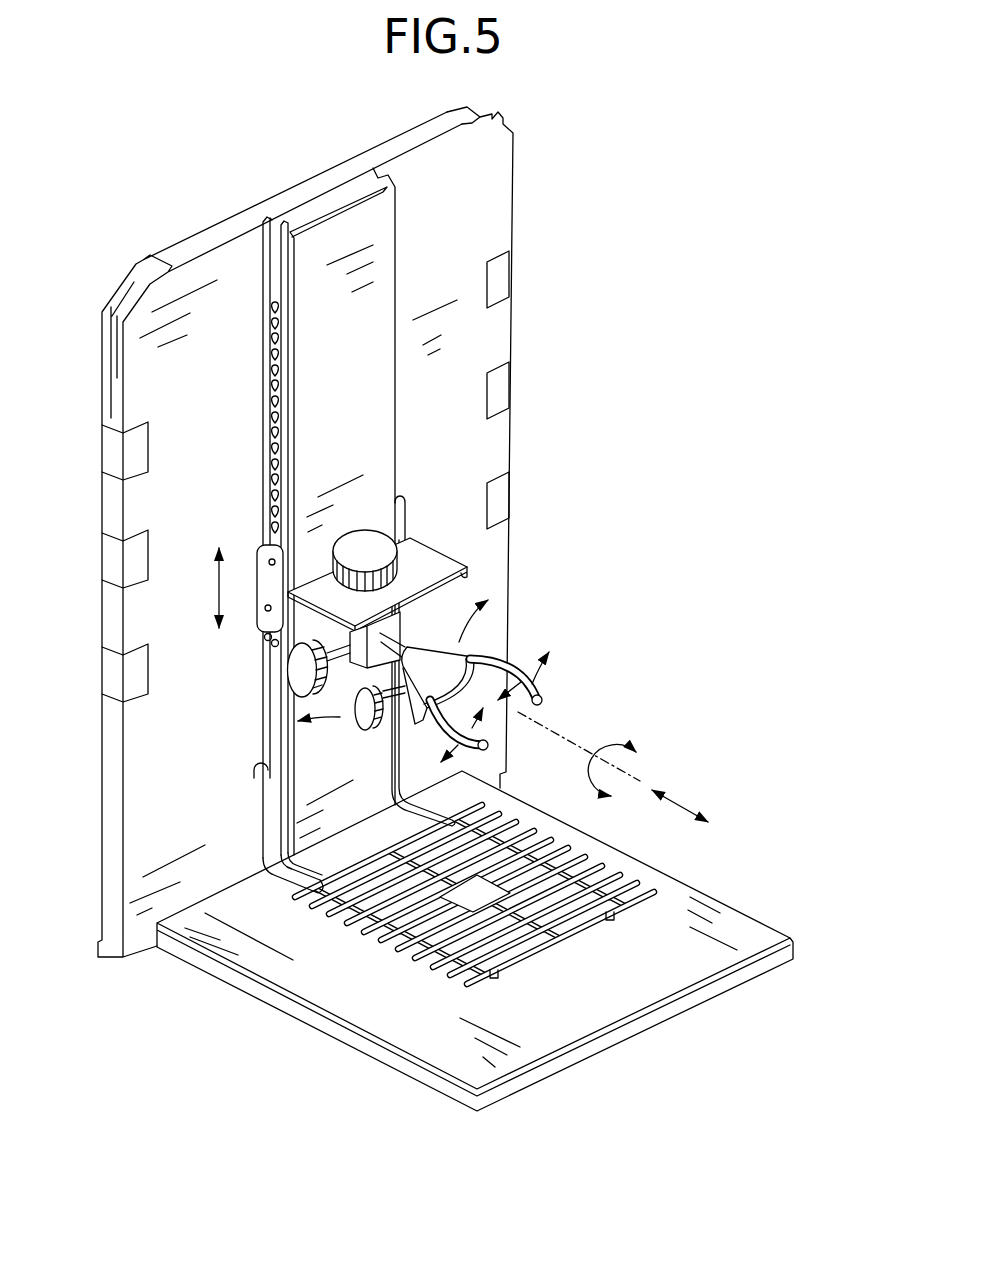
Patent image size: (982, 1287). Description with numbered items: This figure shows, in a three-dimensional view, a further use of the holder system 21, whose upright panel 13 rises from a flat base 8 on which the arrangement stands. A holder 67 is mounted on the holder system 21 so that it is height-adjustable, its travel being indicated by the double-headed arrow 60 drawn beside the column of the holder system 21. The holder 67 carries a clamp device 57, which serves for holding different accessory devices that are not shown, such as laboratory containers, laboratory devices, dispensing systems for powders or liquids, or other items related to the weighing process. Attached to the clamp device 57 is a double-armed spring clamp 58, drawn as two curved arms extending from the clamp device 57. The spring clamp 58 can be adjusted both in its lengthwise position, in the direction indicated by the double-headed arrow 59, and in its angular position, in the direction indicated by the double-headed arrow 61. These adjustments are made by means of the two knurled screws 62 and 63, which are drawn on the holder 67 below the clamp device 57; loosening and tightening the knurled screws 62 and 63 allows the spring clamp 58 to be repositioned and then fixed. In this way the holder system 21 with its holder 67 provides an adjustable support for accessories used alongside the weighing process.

The base plate 8 is at (735, 937).
The back wall panel 13 is at (467, 213).
The holder system 21 is at (356, 397).
The clamp device 57 is at (452, 662).
The double-armed spring clamp 58 is at (537, 688).
The double-headed arrow 59 is at (680, 802).
The double-headed arrow 60 is at (217, 590).
The double-headed arrow 61 is at (627, 740).
The knurled screw 62 is at (368, 712).
The knurled screw 63 is at (298, 673).
The holder 67 is at (488, 568).